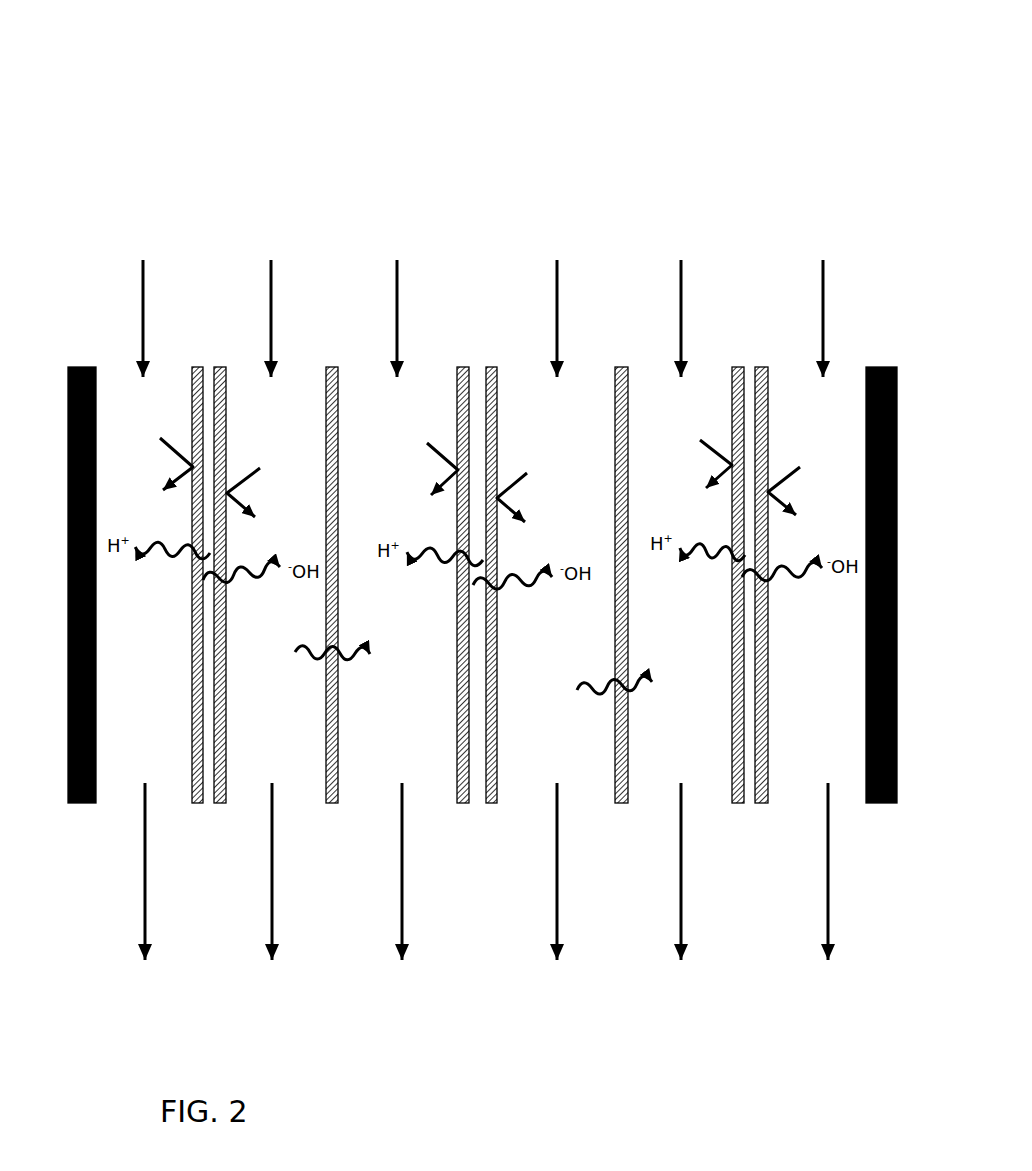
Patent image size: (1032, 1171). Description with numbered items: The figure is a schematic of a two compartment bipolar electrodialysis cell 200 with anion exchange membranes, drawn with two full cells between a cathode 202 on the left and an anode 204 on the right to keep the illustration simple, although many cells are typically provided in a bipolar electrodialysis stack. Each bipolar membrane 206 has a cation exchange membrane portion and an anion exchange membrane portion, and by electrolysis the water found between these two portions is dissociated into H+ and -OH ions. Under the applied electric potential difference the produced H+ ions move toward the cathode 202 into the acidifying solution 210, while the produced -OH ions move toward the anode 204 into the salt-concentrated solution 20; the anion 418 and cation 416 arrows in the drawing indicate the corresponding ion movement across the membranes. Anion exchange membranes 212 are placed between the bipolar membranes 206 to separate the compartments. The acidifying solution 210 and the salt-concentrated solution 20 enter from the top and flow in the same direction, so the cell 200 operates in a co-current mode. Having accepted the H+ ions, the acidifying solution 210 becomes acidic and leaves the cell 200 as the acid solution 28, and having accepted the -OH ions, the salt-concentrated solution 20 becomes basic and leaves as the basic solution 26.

The two compartment bipolar electrodialysis cell 200 is at (346, 150).
The acidifying solution 210 is at (412, 281).
The salt-concentrated solution 20 is at (547, 267).
The cathode 202 is at (62, 707).
The anode 204 is at (905, 727).
The bipolar membrane 206 is at (479, 632).
The anion exchange membrane 212 is at (476, 638).
The anion 418 is at (417, 577).
The cation 416 is at (541, 481).
The acid solution 28 is at (412, 911).
The basic solution 26 is at (549, 911).